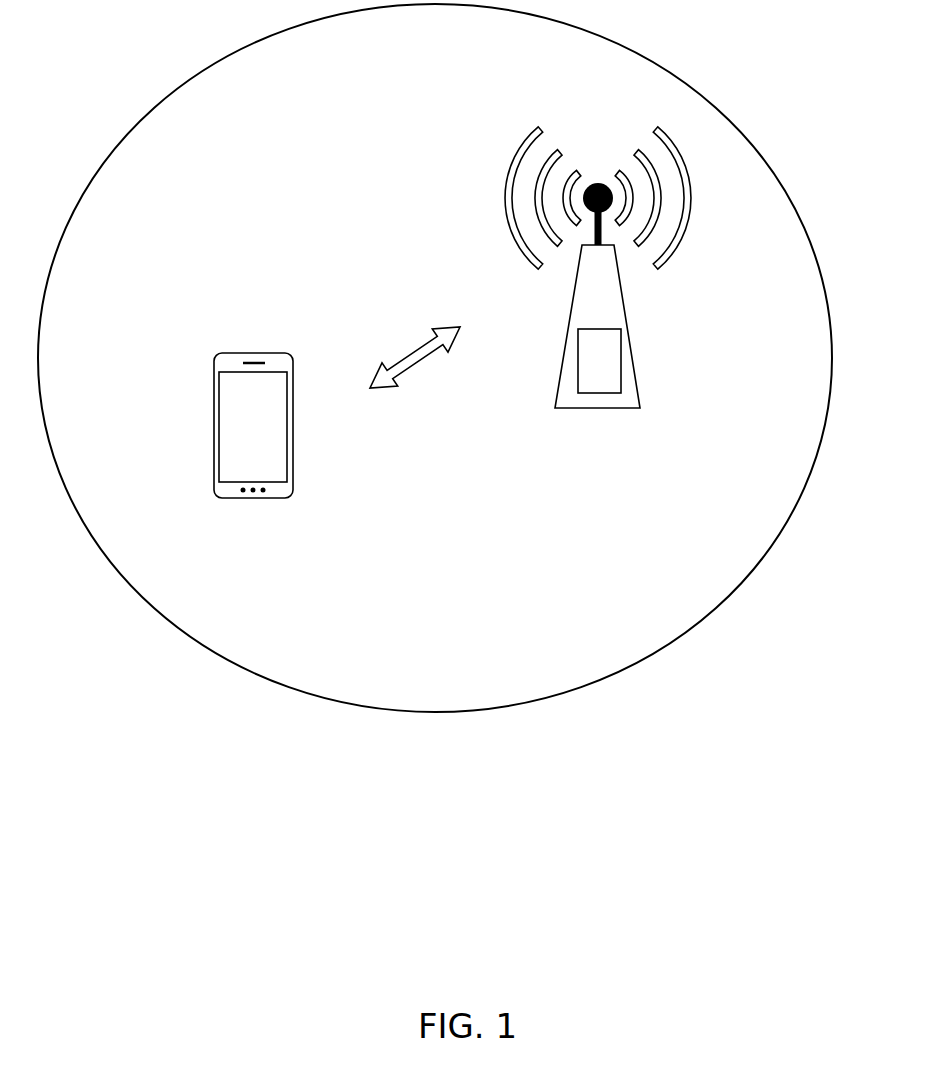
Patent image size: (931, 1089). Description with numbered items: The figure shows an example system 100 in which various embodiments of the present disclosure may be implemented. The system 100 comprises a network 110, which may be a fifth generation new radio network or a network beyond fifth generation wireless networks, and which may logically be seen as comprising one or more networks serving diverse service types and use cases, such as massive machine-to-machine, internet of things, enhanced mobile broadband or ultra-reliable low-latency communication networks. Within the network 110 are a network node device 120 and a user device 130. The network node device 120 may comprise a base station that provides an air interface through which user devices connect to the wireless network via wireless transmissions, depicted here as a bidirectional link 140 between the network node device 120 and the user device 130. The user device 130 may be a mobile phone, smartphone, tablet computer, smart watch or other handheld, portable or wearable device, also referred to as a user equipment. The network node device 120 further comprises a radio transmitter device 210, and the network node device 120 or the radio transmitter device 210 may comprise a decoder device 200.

The system 100 is at (128, 895).
The network 110 is at (755, 565).
The network node device 120 is at (640, 408).
The user device 130 is at (213, 378).
The wireless communication link 140 is at (381, 280).
The decoder device 200 is at (602, 355).
The radio transmitter device 210 is at (577, 328).